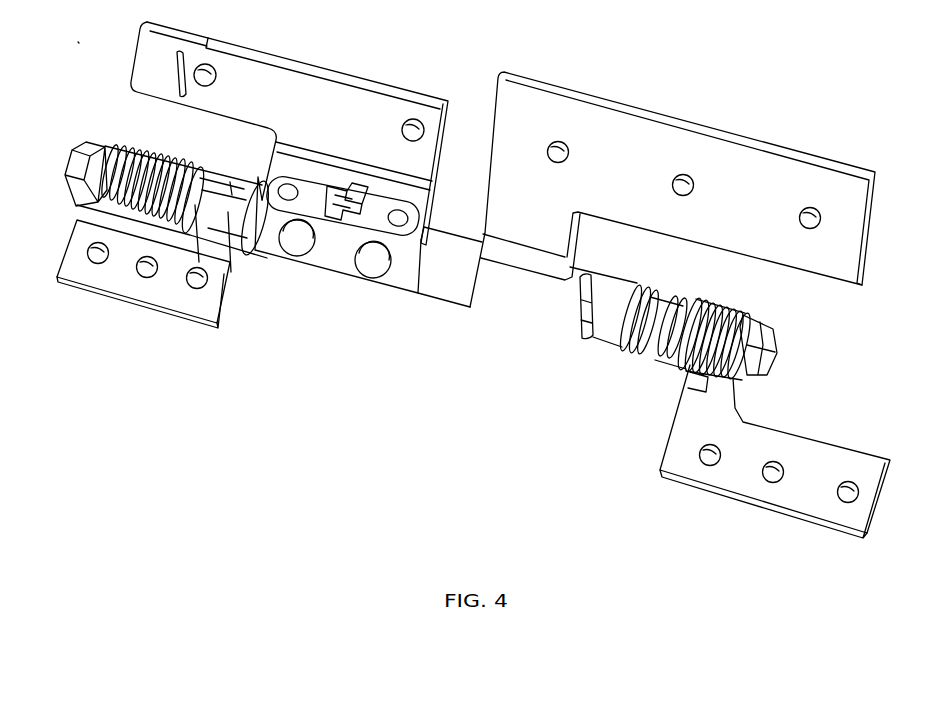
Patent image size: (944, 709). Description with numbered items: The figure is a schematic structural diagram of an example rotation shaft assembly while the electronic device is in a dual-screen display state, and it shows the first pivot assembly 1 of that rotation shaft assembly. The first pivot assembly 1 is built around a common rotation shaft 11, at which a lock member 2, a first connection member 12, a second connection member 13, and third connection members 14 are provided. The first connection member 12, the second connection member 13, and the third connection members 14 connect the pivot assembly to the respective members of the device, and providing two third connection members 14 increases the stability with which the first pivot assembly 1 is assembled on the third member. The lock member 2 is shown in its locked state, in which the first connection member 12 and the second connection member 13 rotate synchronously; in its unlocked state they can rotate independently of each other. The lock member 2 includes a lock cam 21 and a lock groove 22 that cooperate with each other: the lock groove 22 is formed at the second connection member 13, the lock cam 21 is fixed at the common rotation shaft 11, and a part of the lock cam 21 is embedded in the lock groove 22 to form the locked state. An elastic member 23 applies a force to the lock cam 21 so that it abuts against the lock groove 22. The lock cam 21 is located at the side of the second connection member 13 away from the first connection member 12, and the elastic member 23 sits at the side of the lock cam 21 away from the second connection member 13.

The first pivot assembly 1 is at (78, 42).
The lock member 2 is at (610, 435).
The common rotation shaft 11 is at (438, 290).
The first connection member 12 is at (362, 104).
The second connection member 13 is at (683, 148).
The third connection member 14 is at (146, 288).
The lock cam 21 is at (598, 338).
The lock groove 22 is at (584, 278).
The elastic member 23 is at (650, 347).